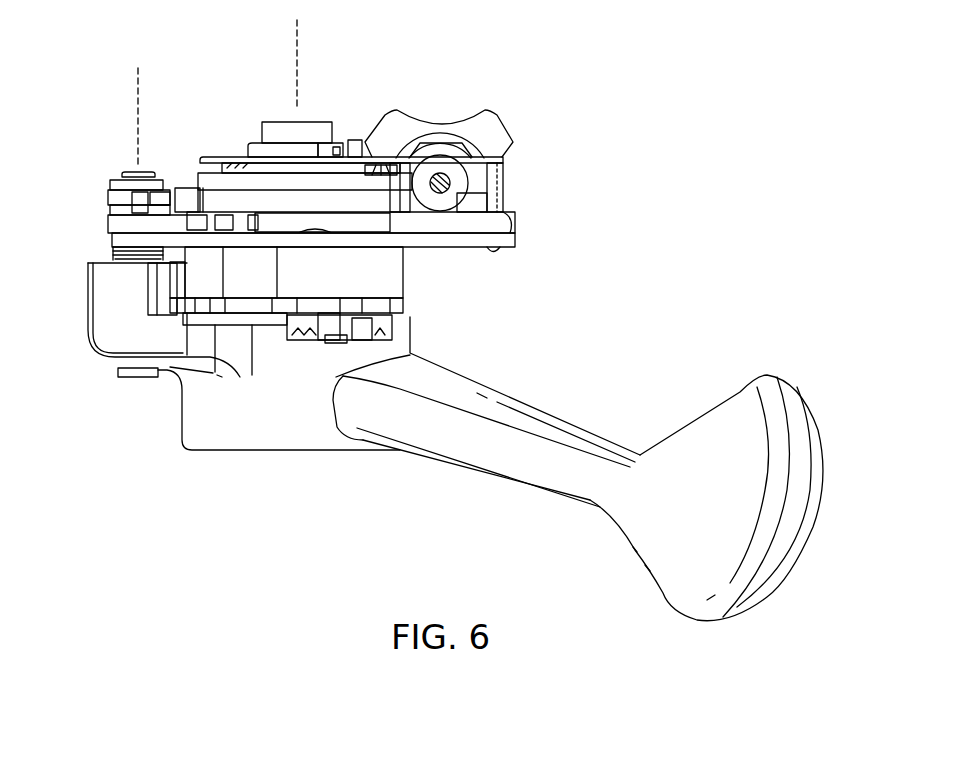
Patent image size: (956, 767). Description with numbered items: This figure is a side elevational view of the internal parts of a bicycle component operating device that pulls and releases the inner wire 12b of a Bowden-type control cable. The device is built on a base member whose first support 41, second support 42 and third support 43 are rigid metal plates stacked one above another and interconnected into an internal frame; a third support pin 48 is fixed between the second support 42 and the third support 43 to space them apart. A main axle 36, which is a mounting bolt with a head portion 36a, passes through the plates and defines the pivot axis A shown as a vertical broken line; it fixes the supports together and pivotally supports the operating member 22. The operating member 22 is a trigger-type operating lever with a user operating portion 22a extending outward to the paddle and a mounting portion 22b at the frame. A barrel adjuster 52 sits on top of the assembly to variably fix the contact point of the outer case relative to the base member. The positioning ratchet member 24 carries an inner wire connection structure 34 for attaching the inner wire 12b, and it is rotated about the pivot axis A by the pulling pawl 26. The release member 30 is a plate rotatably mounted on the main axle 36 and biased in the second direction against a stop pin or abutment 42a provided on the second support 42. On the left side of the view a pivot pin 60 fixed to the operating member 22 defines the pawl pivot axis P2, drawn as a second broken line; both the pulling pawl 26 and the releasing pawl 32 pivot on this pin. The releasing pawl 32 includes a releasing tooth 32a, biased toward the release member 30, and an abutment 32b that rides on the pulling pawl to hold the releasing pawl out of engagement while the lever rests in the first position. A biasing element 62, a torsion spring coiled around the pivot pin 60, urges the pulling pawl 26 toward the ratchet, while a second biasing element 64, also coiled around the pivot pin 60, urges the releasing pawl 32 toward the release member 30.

The inner wire 12b is at (447, 180).
The operating member 22 is at (537, 404).
The user operating portion 22a is at (705, 470).
The mounting portion 22b is at (243, 455).
The positioning ratchet member 24 is at (348, 188).
The pulling pawl 26 is at (105, 190).
The release member 30 is at (400, 218).
The releasing pawl 32 is at (179, 240).
The releasing tooth 32a is at (195, 221).
The abutment 32b is at (139, 199).
The inner wire connection structure 34 is at (472, 168).
The main axle 36 is at (323, 118).
The head portion 36a is at (246, 152).
The first support 41 is at (203, 158).
The second support 42 is at (517, 238).
The stop pin or abutment 42a is at (255, 220).
The third support 43 is at (392, 307).
The third support pin 48 is at (343, 342).
The barrel adjuster 52 is at (500, 113).
The pivot pin 60 is at (134, 171).
The biasing element 62 is at (128, 264).
The biasing element 64 is at (108, 211).
The pivot axis A is at (302, 30).
The pawl pivot axis P2 is at (135, 80).